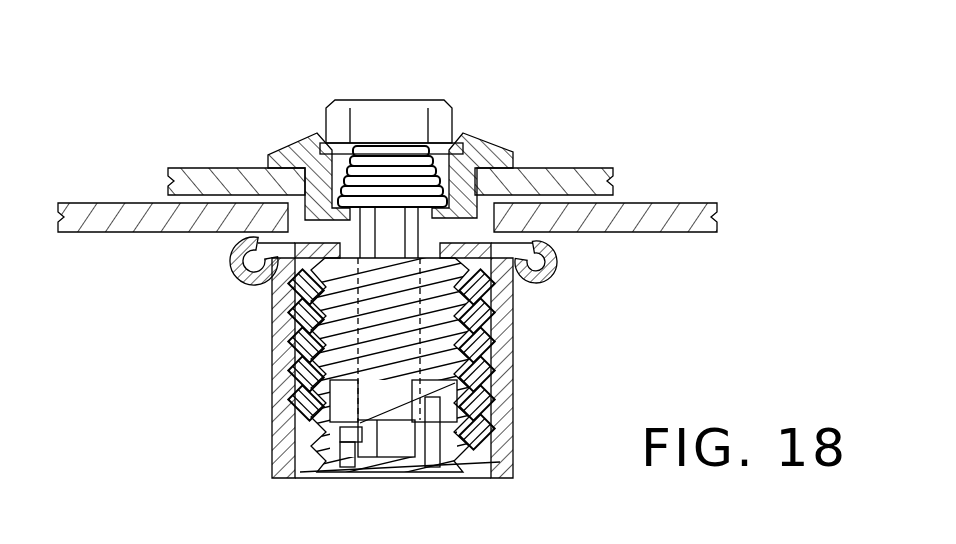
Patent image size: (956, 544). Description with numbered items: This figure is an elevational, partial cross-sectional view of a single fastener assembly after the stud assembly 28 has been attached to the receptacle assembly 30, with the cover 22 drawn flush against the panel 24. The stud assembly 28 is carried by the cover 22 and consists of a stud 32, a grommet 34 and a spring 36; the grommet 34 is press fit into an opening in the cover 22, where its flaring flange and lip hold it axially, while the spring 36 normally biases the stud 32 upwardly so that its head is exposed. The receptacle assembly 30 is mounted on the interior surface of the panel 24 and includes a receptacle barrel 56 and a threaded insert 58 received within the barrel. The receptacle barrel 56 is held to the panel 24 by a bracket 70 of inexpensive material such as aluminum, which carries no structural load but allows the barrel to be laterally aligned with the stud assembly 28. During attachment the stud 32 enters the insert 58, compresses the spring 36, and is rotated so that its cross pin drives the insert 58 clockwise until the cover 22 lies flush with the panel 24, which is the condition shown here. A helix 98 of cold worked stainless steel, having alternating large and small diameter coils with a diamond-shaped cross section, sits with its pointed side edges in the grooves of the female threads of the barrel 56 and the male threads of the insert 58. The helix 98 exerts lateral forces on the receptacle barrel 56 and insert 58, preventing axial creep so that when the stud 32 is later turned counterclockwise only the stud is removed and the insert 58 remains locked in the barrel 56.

The cover 22 is at (577, 168).
The panel 24 is at (124, 233).
The stud assembly 28 is at (428, 96).
The receptacle assembly 30 is at (262, 447).
The stud 32 is at (390, 223).
The grommet 34 is at (280, 152).
The spring 36 is at (445, 178).
The receptacle barrel 56 is at (513, 337).
The insert 58 is at (293, 317).
The bracket 70 is at (548, 258).
The helix 98 is at (512, 427).